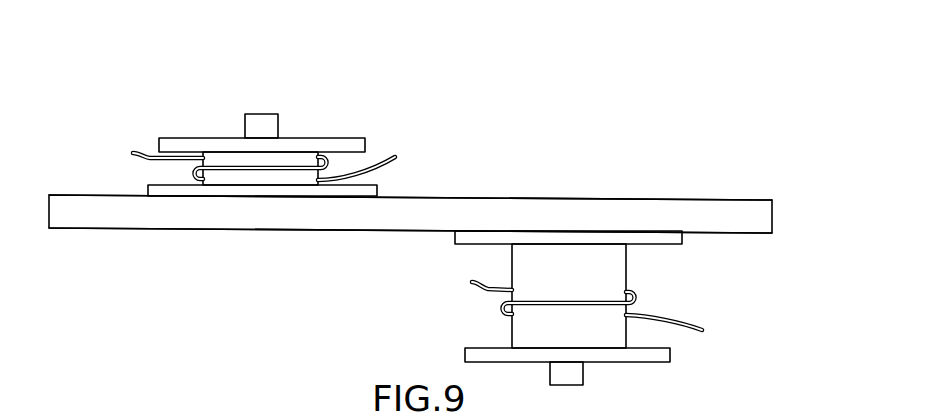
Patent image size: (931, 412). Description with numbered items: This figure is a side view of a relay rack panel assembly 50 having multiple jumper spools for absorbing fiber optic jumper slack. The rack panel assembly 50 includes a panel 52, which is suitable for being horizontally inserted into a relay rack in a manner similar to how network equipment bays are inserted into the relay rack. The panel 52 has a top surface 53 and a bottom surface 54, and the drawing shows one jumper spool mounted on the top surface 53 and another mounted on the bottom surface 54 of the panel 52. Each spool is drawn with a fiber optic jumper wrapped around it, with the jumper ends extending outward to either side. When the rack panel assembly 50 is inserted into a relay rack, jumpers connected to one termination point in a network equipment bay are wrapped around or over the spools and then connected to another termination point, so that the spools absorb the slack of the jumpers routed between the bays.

The rack panel assembly 50 is at (725, 142).
The panel 52 is at (452, 210).
The top surface 53 is at (555, 198).
The bottom surface 54 is at (320, 230).